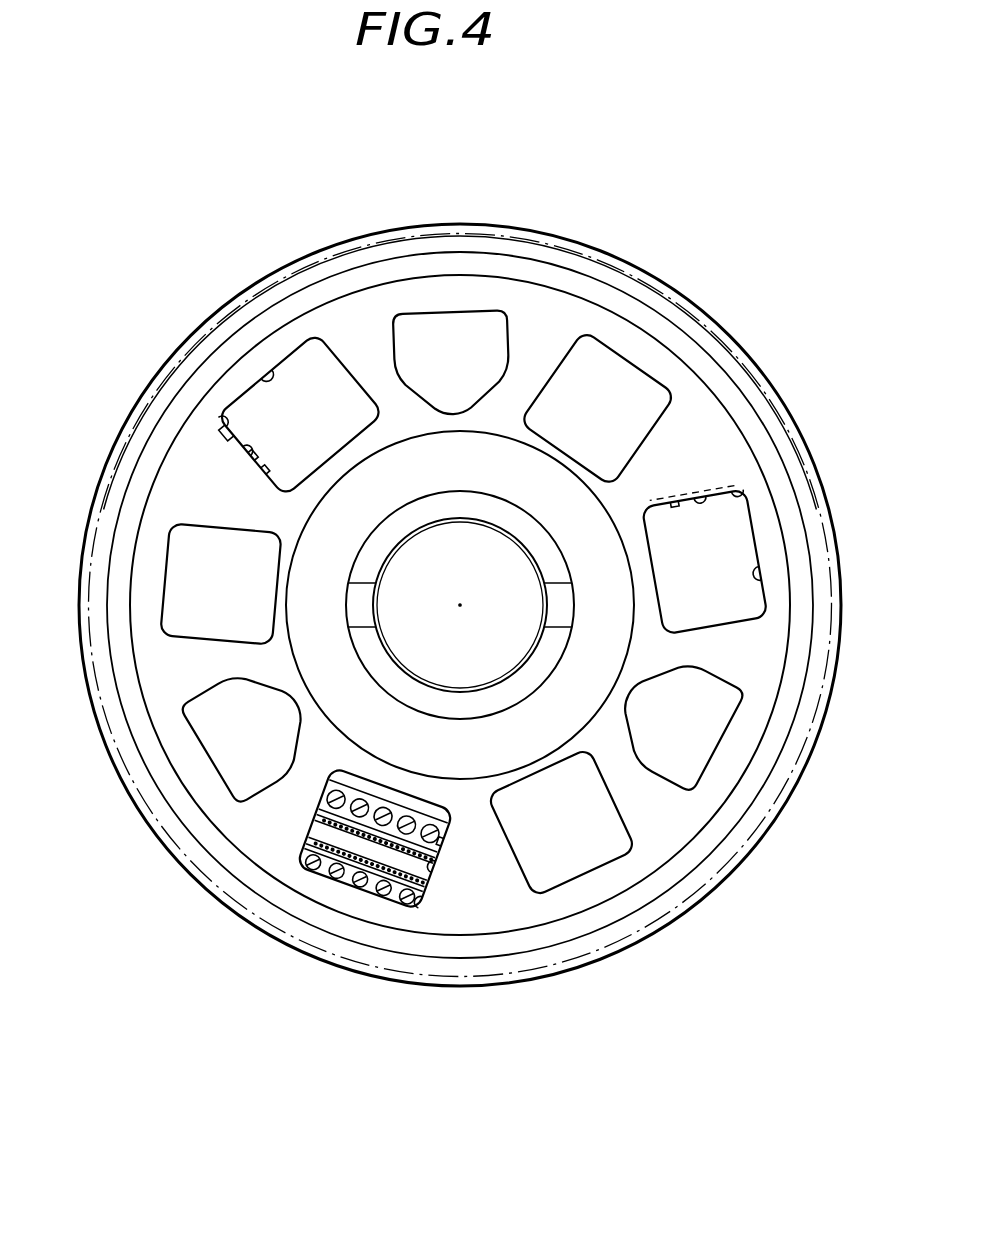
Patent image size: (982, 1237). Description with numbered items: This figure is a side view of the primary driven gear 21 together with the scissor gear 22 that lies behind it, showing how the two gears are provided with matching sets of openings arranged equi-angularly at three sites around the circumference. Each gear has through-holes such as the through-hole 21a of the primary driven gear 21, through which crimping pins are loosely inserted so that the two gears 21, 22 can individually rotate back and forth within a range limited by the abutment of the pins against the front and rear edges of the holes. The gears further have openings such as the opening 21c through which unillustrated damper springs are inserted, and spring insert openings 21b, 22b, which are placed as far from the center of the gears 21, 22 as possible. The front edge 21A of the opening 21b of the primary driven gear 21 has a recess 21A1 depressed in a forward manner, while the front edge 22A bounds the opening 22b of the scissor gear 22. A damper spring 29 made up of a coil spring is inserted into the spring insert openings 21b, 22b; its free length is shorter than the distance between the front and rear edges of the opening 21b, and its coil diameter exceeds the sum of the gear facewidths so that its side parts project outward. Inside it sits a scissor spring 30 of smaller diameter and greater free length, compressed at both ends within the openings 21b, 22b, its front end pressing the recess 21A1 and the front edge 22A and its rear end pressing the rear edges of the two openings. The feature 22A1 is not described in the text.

The primary driven gear 21 is at (182, 450).
The scissor gear 22 is at (763, 517).
The through-hole 21a is at (128, 838).
The opening 21c is at (63, 730).
The spring insert opening 21b is at (752, 578).
The spring insert opening 22b is at (262, 390).
The front edge 21A is at (747, 500).
The recess 21A1 is at (693, 500).
The front edge 22A is at (220, 423).
The engaging step of pole piece 22A1 is at (218, 458).
The damper spring 29 is at (330, 867).
The scissor spring 30 is at (300, 830).